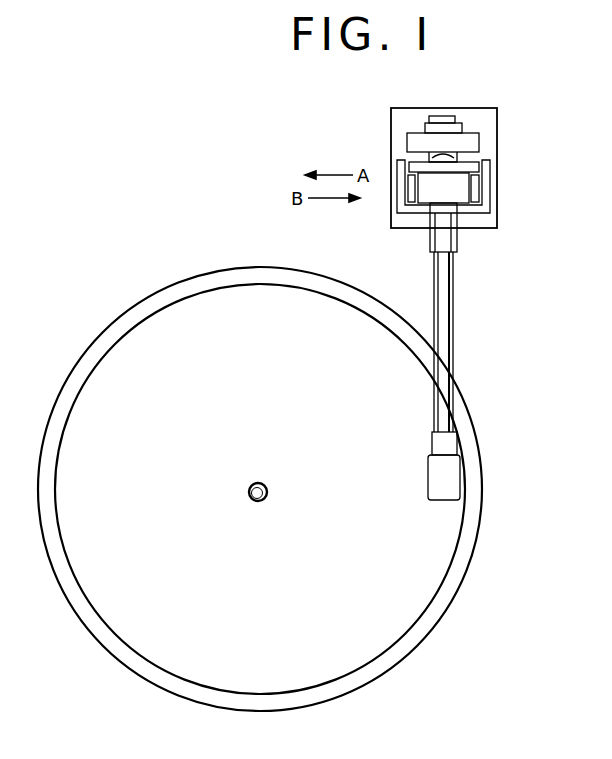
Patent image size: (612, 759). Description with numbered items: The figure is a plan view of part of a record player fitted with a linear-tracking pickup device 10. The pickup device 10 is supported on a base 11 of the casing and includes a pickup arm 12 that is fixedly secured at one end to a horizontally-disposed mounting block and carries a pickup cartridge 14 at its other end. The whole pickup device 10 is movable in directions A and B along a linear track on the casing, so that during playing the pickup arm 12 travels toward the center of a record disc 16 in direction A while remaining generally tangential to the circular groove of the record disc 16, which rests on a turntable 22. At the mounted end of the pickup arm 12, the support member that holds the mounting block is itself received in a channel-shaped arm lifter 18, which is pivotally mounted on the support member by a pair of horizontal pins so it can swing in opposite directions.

The pickup device 10 is at (467, 189).
The base 11 is at (499, 128).
The pickup arm 12 is at (455, 307).
The pickup cartridge 14 is at (438, 478).
The record disc 16 is at (450, 575).
The arm lifter 18 is at (413, 217).
The turntable 22 is at (430, 637).